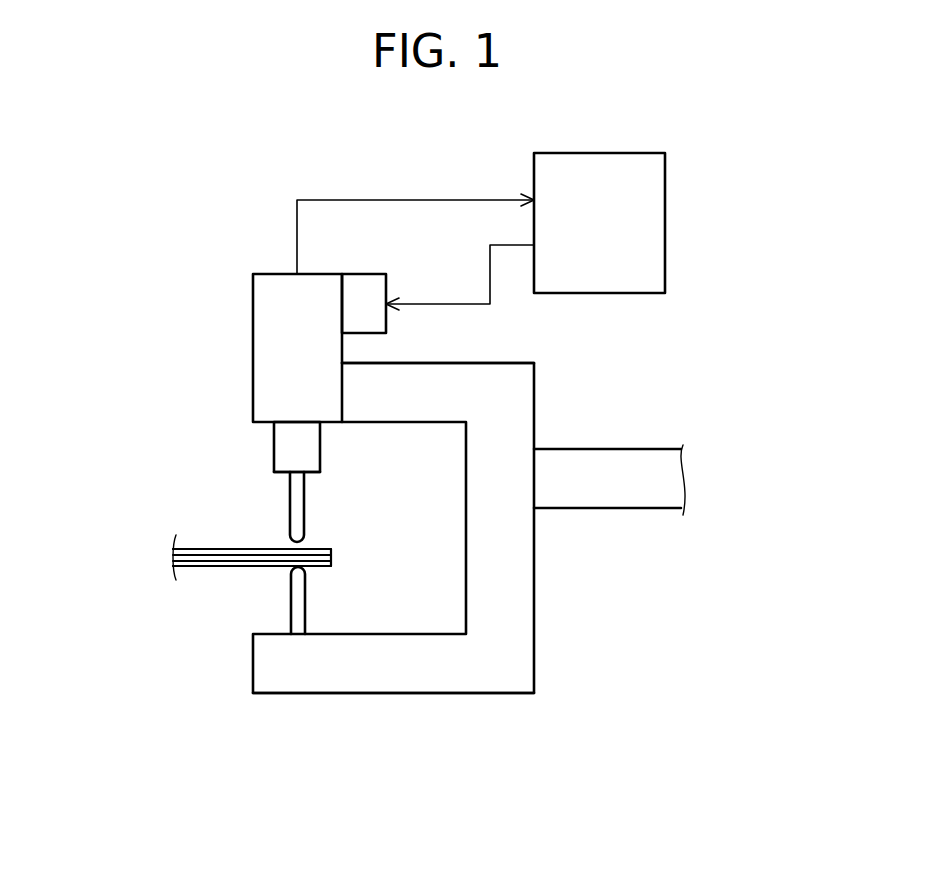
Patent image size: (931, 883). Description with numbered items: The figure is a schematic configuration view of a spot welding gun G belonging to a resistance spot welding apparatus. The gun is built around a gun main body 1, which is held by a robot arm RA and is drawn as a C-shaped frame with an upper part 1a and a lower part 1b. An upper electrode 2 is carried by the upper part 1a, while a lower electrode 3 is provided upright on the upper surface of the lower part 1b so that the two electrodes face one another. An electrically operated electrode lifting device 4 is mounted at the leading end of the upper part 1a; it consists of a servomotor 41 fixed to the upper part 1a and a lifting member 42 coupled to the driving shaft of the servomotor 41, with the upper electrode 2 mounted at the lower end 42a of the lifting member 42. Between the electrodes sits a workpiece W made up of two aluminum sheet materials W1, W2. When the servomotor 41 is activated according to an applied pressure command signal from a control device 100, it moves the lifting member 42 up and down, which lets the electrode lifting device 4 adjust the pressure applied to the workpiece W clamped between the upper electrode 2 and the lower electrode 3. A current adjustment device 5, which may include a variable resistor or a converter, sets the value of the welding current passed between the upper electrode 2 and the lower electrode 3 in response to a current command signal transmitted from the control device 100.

The gun main body 1 is at (429, 544).
The upper part of gun main body 1a is at (372, 361).
The lower part of gun main body 1b is at (327, 693).
The upper electrode 2 is at (300, 512).
The lower electrode 3 is at (295, 592).
The electrode lifting device 4 is at (307, 374).
The servomotor 41 is at (253, 295).
The lifting member 42 is at (245, 459).
The lower end of lifting member 42a is at (282, 473).
The current adjustment device 5 is at (387, 280).
The control device 100 is at (665, 216).
The spot welding gun G is at (190, 453).
The workpiece W is at (268, 547).
The aluminum sheet material W1 is at (331, 553).
The aluminum sheet material W2 is at (331, 561).
The robot arm RA is at (643, 449).